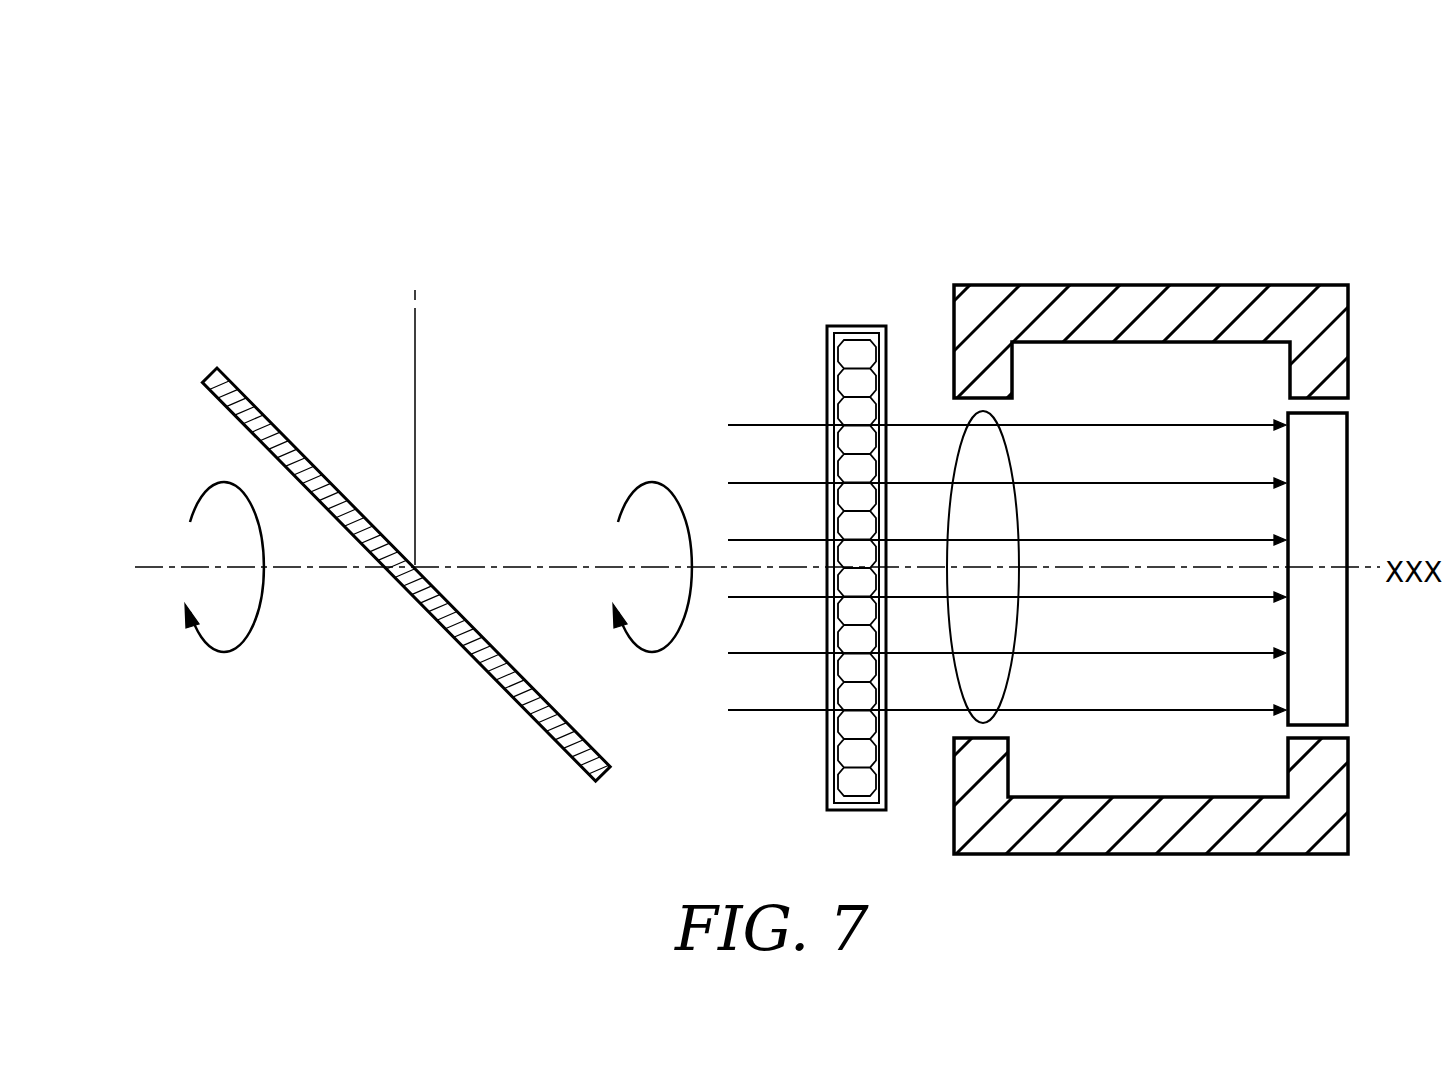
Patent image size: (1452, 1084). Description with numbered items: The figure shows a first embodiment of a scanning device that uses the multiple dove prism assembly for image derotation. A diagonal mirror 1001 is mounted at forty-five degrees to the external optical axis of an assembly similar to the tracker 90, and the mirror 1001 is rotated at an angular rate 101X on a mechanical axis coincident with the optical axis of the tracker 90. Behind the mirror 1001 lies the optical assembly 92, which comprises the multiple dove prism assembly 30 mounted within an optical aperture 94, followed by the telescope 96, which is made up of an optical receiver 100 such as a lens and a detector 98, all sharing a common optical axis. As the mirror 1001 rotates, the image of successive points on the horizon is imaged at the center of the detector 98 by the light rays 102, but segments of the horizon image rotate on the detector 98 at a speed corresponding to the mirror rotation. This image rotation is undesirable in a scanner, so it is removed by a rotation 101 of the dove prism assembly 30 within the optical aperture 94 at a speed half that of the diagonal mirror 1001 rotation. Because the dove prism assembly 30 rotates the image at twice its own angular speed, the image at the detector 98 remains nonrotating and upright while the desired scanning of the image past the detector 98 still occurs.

The tracking device 90 is at (1047, 469).
The optical assembly 92 is at (779, 535).
The optical aperture 94 is at (862, 327).
The multiple dove prism assembly 30 is at (853, 390).
The optical receiver 100 is at (998, 460).
The detector 98 is at (1333, 440).
The telescope 96 is at (1325, 793).
The light rays 102 is at (763, 735).
The mirror 1001 is at (452, 630).
The angular rate of mirror rotation 101X is at (243, 650).
The rotation of dove prism assembly 101 is at (663, 650).